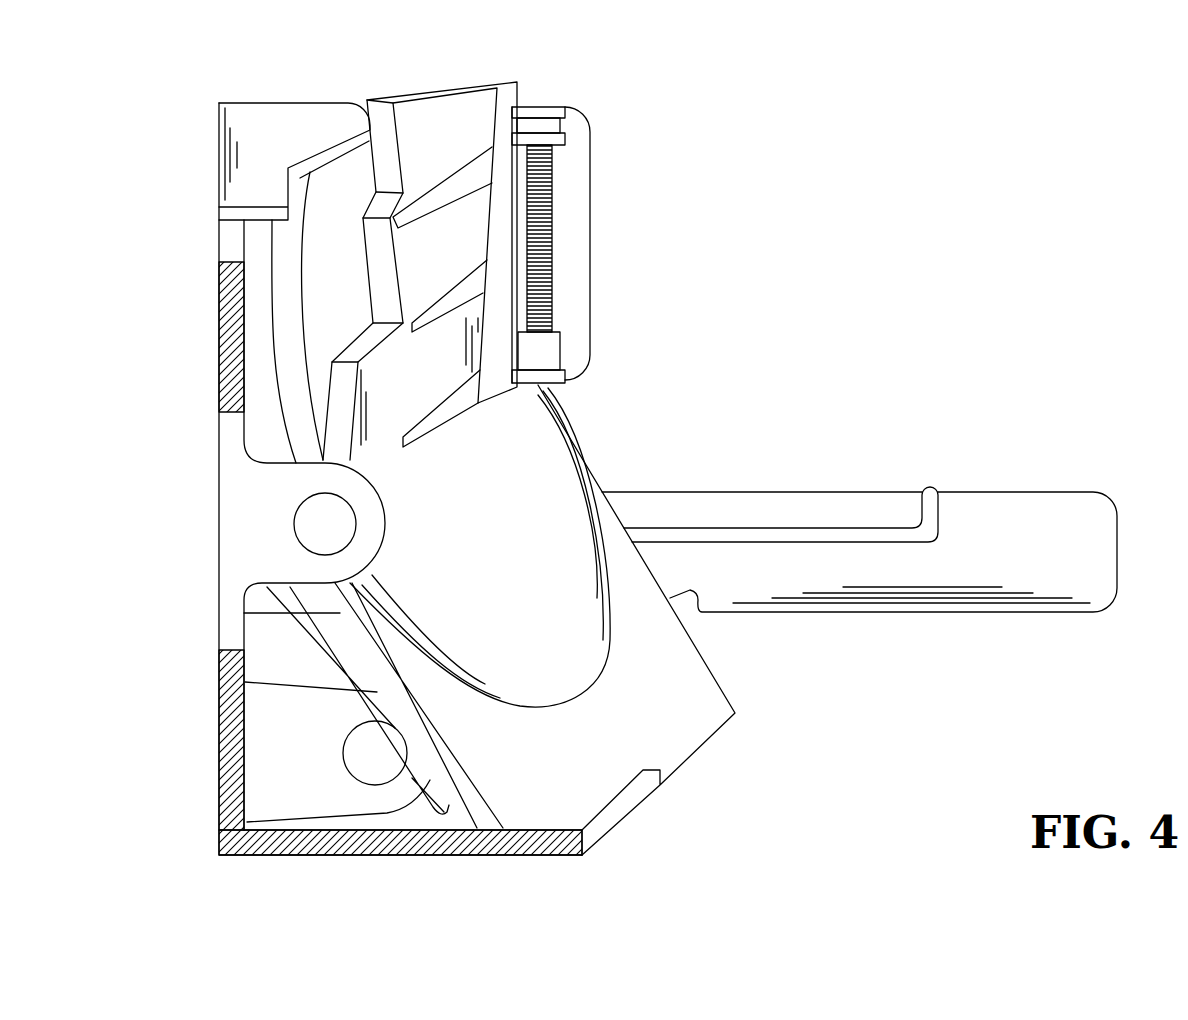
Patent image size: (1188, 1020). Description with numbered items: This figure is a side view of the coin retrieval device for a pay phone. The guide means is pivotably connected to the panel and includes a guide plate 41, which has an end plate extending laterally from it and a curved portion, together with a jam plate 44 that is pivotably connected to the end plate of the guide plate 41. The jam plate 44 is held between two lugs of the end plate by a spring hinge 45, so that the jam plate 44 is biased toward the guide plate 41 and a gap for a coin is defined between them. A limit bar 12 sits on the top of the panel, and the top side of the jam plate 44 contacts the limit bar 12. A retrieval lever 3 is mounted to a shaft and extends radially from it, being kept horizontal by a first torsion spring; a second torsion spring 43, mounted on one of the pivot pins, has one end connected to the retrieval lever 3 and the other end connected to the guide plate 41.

The retrieval lever 3 is at (1025, 508).
The limit bar 12 is at (278, 118).
The guide plate 41 is at (287, 330).
The second torsion spring 43 is at (828, 533).
The jam plate 44 is at (543, 497).
The spring hinge 45 is at (553, 255).